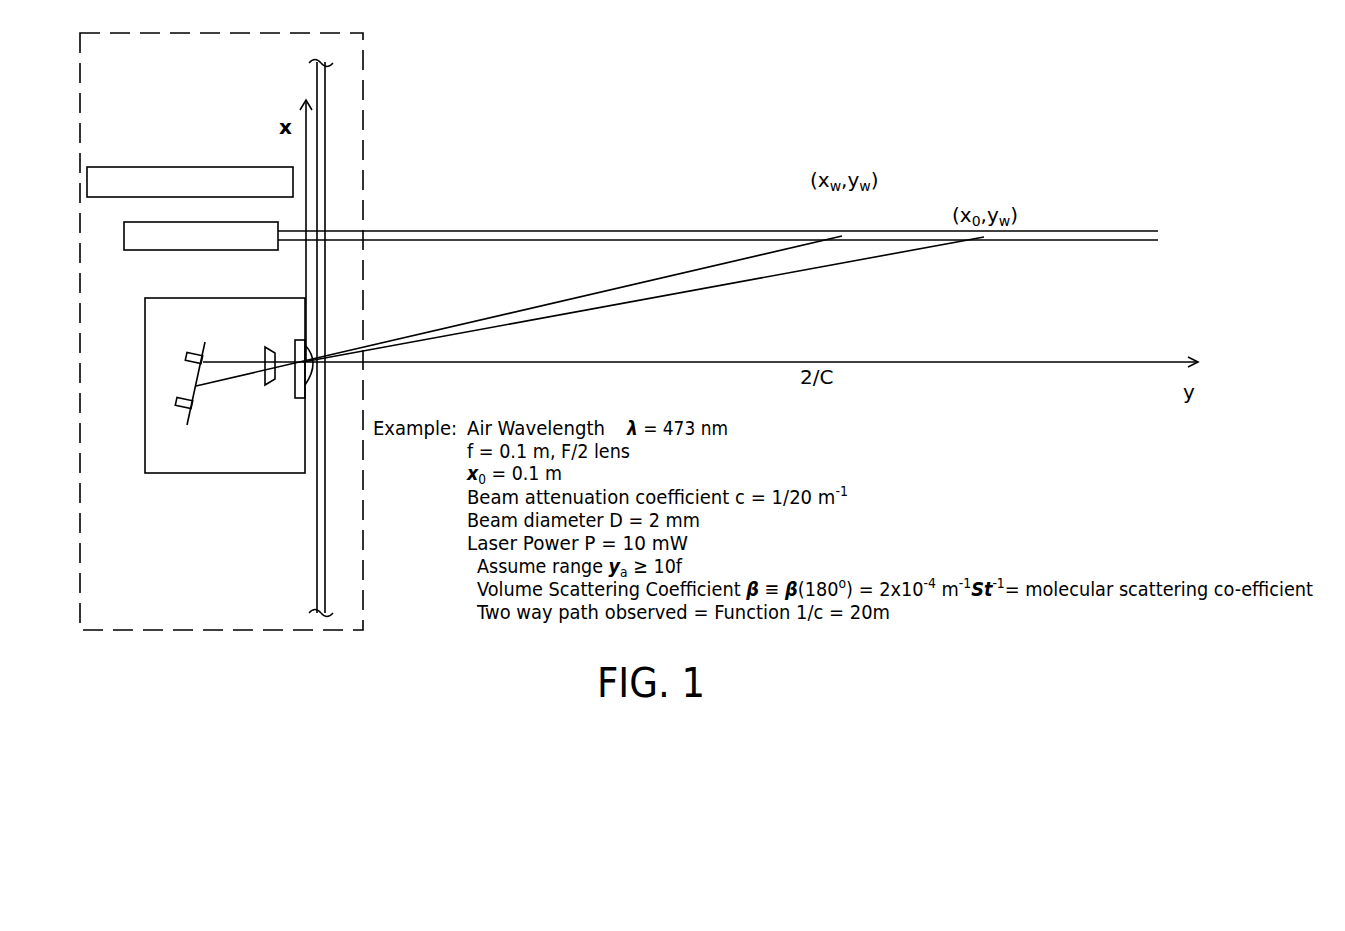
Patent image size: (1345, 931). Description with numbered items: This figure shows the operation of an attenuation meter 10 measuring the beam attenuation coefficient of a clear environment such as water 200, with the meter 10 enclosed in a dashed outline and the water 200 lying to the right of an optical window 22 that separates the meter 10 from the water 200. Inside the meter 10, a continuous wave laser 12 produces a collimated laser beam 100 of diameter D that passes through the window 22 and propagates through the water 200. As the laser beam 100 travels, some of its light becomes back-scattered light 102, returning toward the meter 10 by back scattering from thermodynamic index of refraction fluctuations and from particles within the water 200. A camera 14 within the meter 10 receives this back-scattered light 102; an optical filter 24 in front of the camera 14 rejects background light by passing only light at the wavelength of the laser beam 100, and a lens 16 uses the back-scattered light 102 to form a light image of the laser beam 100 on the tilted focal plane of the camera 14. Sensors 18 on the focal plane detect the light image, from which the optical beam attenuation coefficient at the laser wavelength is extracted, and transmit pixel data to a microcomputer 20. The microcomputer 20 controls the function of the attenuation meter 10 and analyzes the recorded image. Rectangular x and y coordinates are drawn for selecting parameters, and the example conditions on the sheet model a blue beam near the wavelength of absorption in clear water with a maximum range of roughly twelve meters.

The attenuation meter 10 is at (293, 34).
The continuous wave laser 12 is at (158, 250).
The camera 14 is at (200, 473).
The lens 16 is at (276, 380).
The sensors 18 is at (186, 358).
The microcomputer 20 is at (129, 167).
The optical window 22 is at (312, 66).
The optical filter 24 is at (301, 340).
The laser beam 100 is at (457, 231).
The back-scattered light 102 is at (657, 300).
The water 200 is at (620, 154).